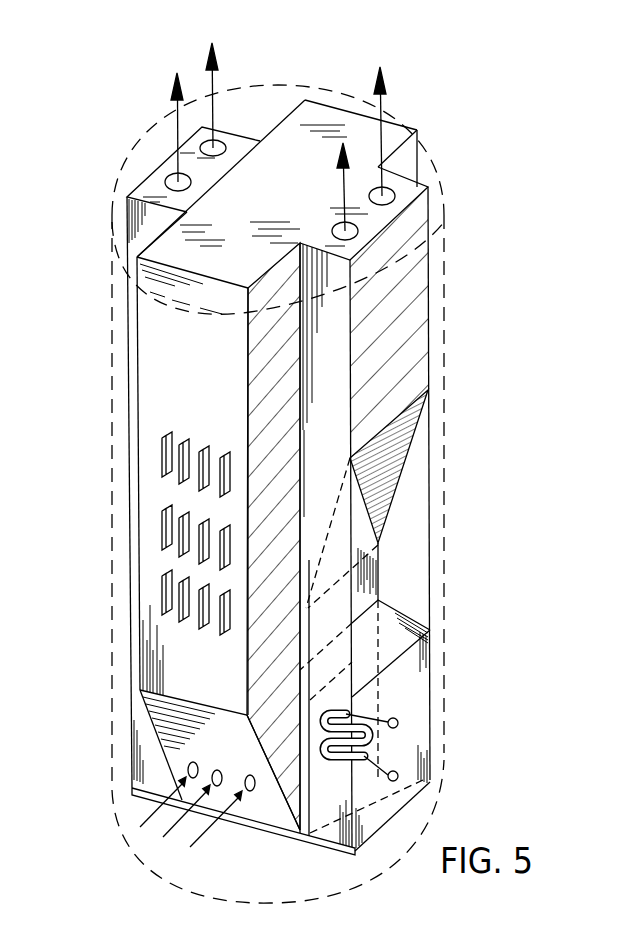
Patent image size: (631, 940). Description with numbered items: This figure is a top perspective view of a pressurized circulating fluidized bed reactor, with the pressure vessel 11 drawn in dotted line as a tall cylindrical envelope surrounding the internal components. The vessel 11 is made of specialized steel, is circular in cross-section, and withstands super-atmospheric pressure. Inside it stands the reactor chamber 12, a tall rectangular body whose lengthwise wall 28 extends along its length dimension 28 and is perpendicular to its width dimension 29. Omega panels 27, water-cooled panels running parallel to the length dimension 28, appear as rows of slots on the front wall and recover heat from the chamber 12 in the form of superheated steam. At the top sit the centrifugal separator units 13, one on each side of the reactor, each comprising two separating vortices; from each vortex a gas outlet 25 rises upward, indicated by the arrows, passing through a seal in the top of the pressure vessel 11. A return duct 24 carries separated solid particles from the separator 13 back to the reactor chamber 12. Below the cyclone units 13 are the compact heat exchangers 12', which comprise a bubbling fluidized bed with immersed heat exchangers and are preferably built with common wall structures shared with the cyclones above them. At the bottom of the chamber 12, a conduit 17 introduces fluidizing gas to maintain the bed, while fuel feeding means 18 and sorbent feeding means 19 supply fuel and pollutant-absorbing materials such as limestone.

The pressure vessel 11 is at (443, 471).
The reactor chamber 12 is at (223, 526).
The compact heat exchanger 12' is at (272, 715).
The centrifugal separator 13 is at (150, 162).
The conduit 17 is at (207, 830).
The fuel feeding means 18 is at (167, 827).
The sorbent feeding means 19 is at (147, 812).
The return duct 24 is at (307, 612).
The gas outlet 25 is at (377, 186).
The omega panels 27 is at (162, 465).
The length dimension 28 is at (267, 385).
The width dimension 29 is at (152, 365).